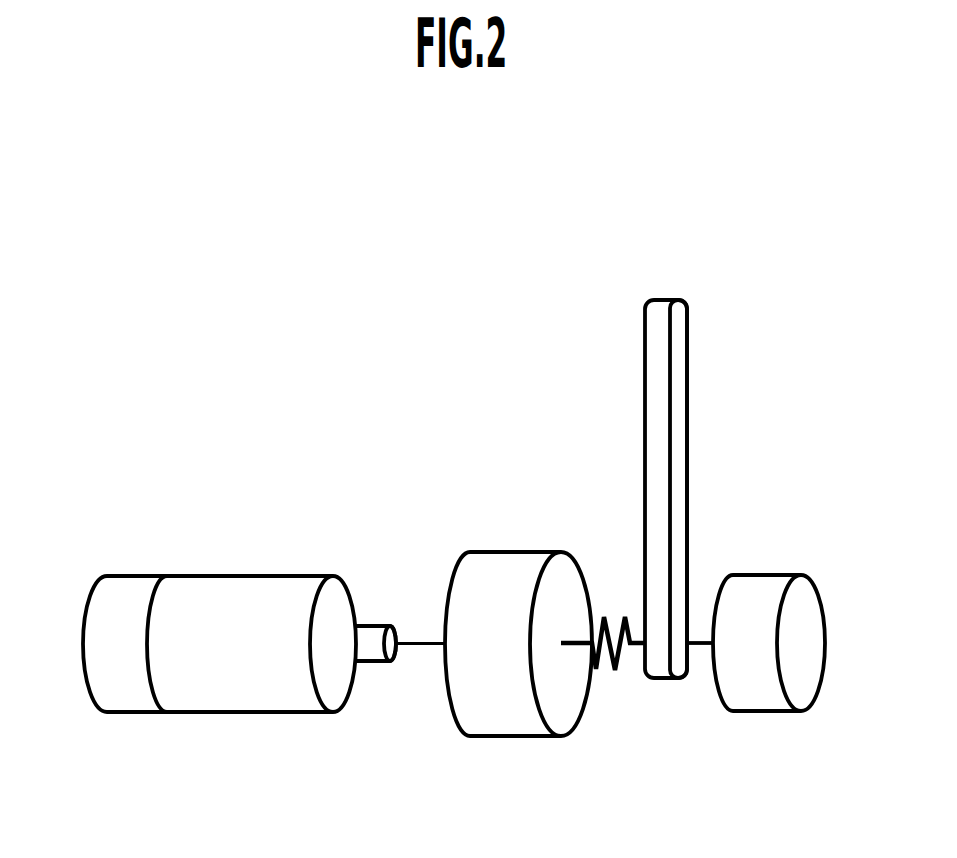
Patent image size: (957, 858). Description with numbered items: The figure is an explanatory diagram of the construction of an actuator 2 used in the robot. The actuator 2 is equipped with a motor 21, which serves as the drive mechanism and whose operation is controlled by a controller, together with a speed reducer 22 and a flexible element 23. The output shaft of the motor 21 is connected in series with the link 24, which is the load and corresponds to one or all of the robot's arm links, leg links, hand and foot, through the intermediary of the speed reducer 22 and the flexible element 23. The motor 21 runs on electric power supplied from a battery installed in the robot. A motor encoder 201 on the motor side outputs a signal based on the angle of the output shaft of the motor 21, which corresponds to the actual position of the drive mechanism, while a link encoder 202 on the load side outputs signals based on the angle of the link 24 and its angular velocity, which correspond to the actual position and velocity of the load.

The actuator 2 is at (245, 295).
The motor 21 is at (277, 580).
The motor encoder 201 is at (137, 580).
The speed reducer 22 is at (510, 555).
The flexible element 23 is at (615, 598).
The link 24 is at (667, 308).
The link encoder 202 is at (770, 582).